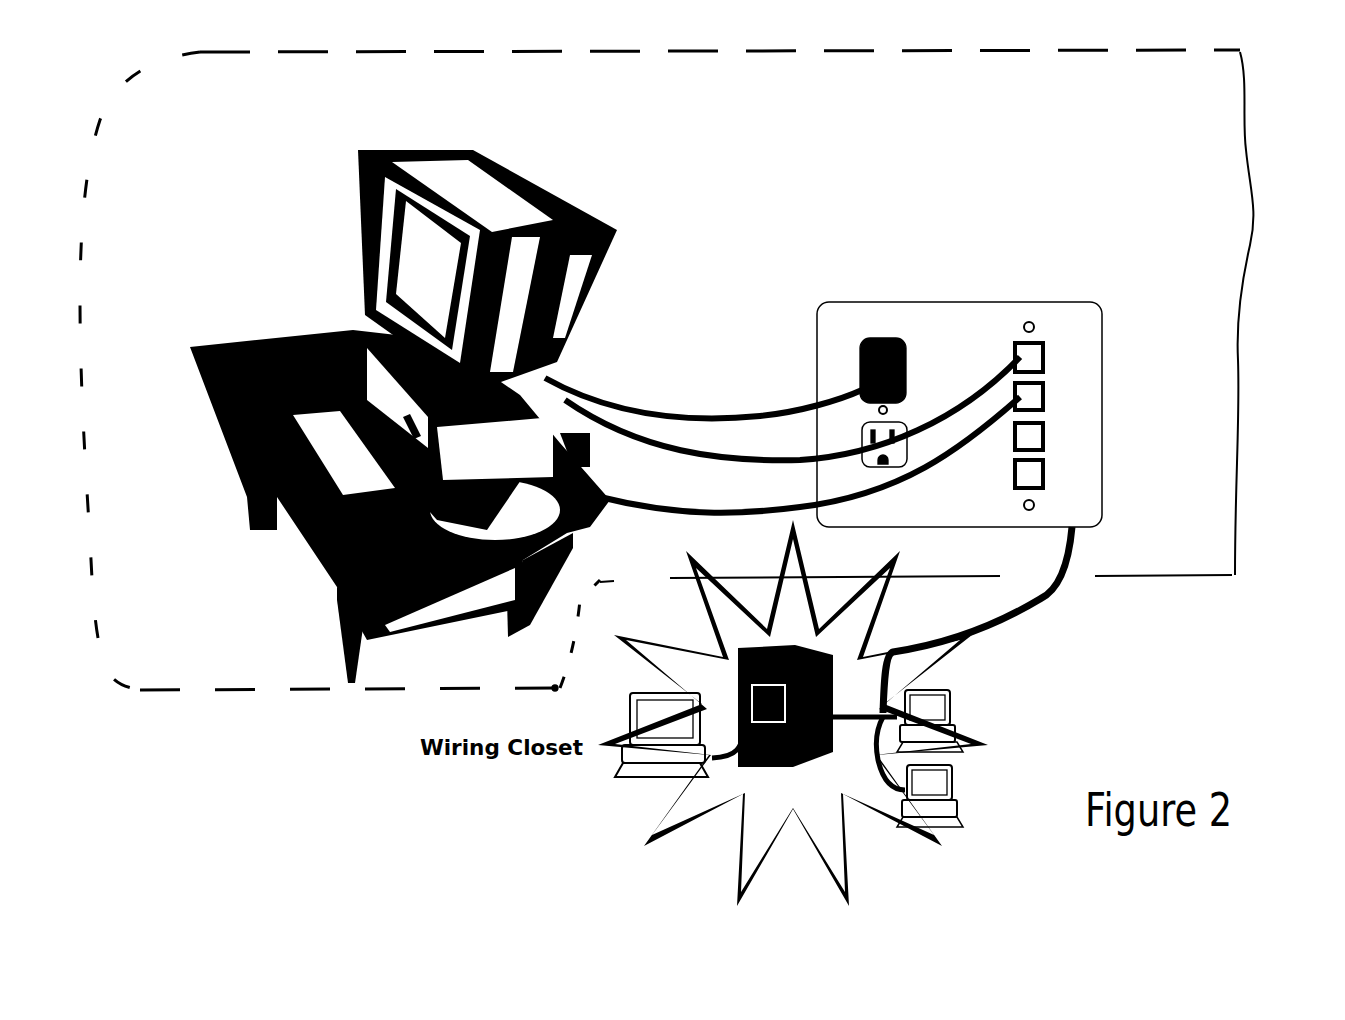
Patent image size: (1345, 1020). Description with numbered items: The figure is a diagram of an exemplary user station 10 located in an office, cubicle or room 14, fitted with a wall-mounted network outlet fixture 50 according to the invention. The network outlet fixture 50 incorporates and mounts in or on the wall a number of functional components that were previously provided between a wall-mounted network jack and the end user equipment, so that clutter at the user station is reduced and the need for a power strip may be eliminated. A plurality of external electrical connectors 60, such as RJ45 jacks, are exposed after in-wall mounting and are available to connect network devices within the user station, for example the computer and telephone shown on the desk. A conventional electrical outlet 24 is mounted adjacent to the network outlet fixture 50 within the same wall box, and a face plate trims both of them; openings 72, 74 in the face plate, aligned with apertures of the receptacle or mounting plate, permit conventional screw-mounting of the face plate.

The user station 10 is at (1198, 290).
The office, cubicle, room 14 is at (1237, 345).
The electrical outlet 24 is at (912, 410).
The network outlet fixture 50 is at (1098, 312).
The external electrical connectors 60 is at (1045, 356).
The opening 72 is at (867, 412).
The opening 74 is at (1027, 322).